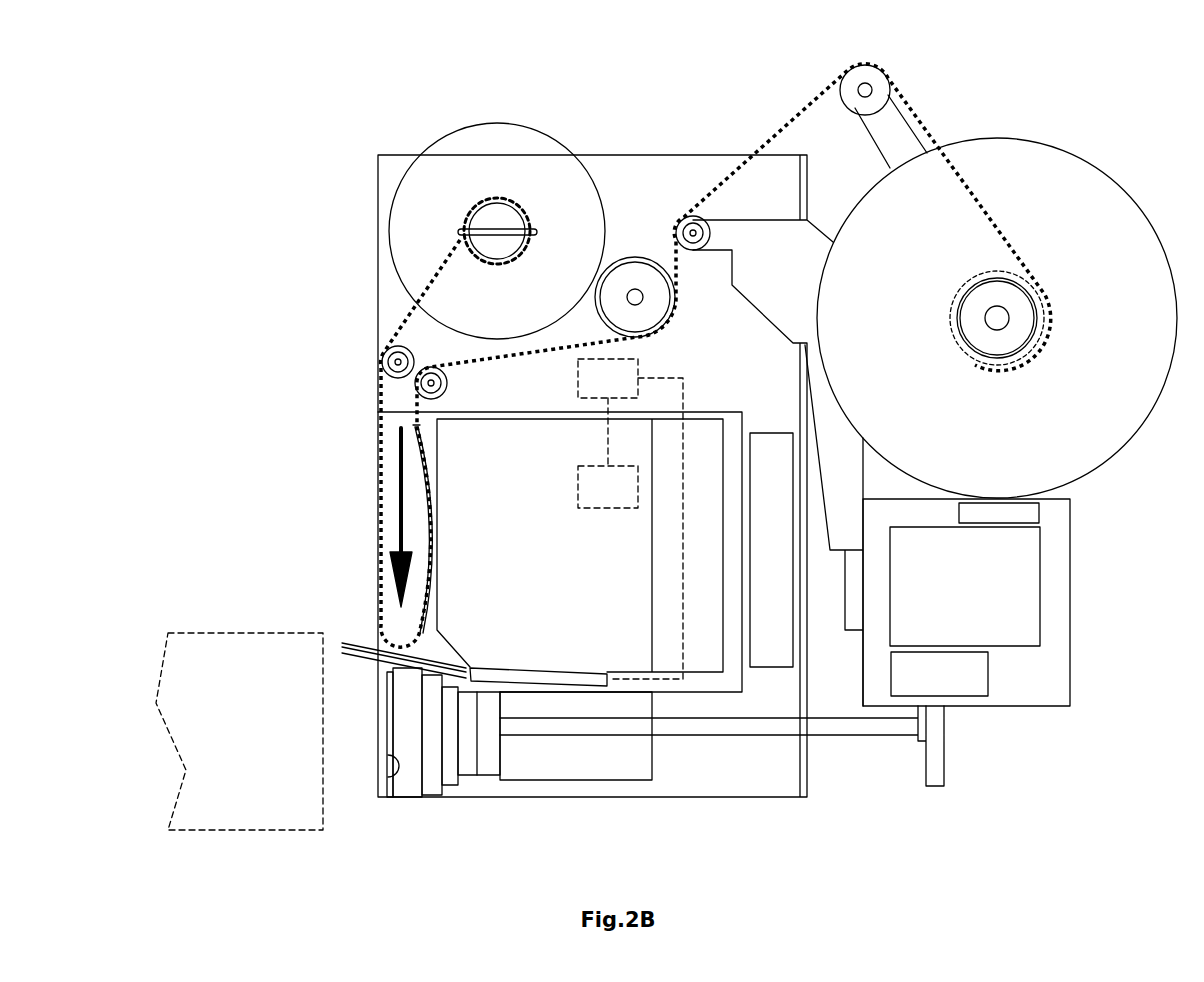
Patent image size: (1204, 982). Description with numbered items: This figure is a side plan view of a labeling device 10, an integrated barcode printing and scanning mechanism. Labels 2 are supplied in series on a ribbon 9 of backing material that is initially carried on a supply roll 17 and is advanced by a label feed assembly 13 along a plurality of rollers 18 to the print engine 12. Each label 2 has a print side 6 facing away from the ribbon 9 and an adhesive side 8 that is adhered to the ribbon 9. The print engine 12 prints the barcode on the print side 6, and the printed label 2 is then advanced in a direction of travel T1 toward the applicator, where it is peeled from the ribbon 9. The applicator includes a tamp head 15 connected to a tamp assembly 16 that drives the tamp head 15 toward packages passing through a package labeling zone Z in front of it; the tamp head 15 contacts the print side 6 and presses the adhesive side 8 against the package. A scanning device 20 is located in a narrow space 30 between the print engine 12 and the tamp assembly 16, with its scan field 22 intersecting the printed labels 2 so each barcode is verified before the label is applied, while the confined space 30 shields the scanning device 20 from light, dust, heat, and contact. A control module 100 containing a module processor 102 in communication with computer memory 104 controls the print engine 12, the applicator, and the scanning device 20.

The labeling device 10 is at (412, 118).
The rollers 18 is at (513, 165).
The control module 100 is at (693, 155).
The label feed assembly 13 is at (968, 108).
The supply roll 17 is at (1077, 155).
The ribbon 9 is at (427, 270).
The direction of travel T1 is at (397, 463).
The module processor 102 is at (626, 392).
The computer memory 104 is at (626, 499).
The print engine 12 is at (556, 540).
The shipping label 2 is at (428, 572).
The scan field 22 is at (367, 640).
The scanning device 20 is at (543, 677).
The adhesive side 8 is at (387, 702).
The print side 6 is at (397, 773).
The tamp head 15 is at (404, 793).
The tamp assembly 16 is at (519, 772).
The narrow space 30 is at (624, 690).
The package labeling zone Z is at (213, 633).